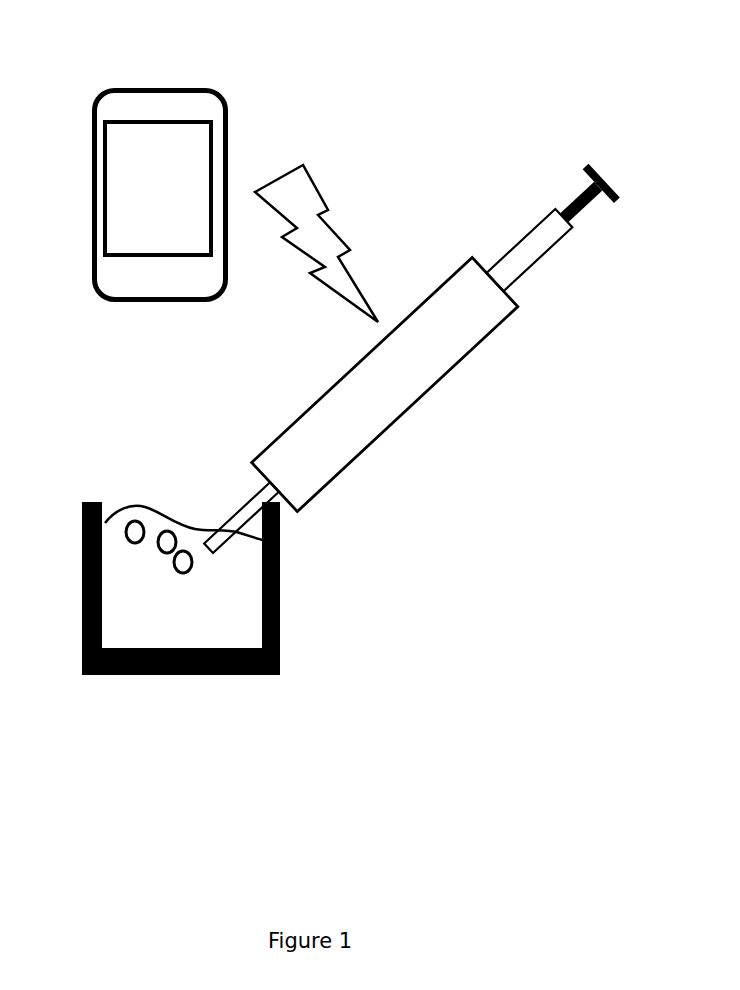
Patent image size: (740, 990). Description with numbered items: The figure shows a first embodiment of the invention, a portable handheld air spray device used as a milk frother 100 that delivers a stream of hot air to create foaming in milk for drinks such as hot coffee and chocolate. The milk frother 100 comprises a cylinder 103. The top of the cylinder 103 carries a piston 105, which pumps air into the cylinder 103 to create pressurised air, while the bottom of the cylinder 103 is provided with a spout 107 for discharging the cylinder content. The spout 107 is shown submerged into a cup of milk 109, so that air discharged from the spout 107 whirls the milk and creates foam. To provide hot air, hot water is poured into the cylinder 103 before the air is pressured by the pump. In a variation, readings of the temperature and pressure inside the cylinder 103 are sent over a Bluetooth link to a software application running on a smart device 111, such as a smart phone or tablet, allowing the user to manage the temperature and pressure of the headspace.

The milk frother 100 is at (377, 204).
The cylinder 103 is at (462, 387).
The piston 105 is at (564, 252).
The spout 107 is at (232, 491).
The cup of milk 109 is at (237, 689).
The smart device 111 is at (123, 76).